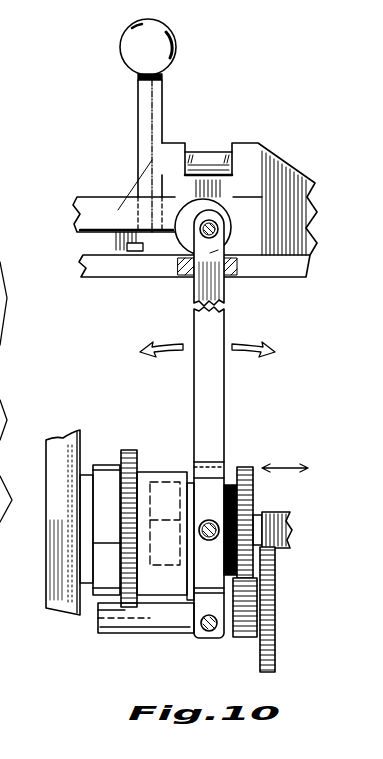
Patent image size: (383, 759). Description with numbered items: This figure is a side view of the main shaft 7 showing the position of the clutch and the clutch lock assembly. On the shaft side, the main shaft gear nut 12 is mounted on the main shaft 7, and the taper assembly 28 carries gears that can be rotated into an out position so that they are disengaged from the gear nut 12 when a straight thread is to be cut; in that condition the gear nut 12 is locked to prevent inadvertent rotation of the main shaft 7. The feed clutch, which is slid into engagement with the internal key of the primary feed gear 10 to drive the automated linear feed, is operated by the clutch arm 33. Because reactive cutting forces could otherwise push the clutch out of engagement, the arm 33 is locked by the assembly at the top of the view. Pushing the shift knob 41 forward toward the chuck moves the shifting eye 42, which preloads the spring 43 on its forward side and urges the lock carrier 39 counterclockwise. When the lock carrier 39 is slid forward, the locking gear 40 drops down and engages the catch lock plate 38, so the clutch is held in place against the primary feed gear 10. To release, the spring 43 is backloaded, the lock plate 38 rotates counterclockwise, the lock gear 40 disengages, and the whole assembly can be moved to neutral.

The shift knob 41 is at (169, 52).
The shifting eye 42 is at (130, 205).
The spring 43 is at (212, 152).
The lock carrier 39 is at (283, 178).
The catch lock plate 38 is at (95, 270).
The locking gear 40 is at (140, 252).
The clutch arm 33 is at (223, 337).
The main shaft gear nut 12 is at (245, 465).
The main shaft 7 is at (278, 512).
The primary feed gear 10 is at (135, 608).
The taper assembly 28 is at (252, 638).